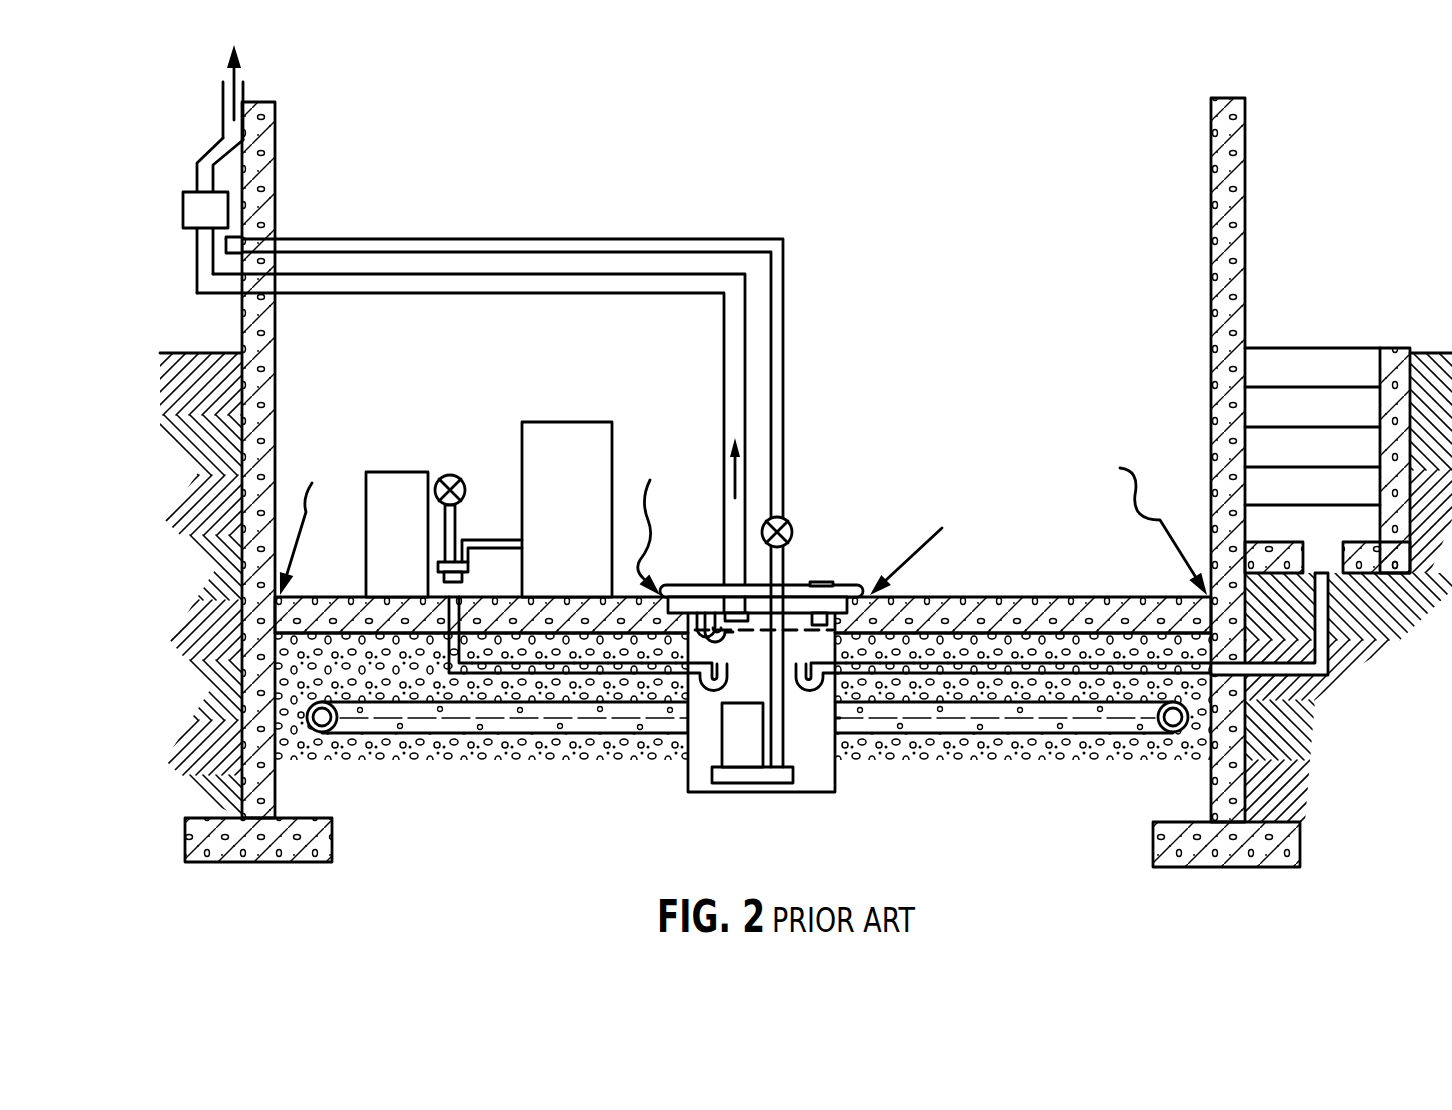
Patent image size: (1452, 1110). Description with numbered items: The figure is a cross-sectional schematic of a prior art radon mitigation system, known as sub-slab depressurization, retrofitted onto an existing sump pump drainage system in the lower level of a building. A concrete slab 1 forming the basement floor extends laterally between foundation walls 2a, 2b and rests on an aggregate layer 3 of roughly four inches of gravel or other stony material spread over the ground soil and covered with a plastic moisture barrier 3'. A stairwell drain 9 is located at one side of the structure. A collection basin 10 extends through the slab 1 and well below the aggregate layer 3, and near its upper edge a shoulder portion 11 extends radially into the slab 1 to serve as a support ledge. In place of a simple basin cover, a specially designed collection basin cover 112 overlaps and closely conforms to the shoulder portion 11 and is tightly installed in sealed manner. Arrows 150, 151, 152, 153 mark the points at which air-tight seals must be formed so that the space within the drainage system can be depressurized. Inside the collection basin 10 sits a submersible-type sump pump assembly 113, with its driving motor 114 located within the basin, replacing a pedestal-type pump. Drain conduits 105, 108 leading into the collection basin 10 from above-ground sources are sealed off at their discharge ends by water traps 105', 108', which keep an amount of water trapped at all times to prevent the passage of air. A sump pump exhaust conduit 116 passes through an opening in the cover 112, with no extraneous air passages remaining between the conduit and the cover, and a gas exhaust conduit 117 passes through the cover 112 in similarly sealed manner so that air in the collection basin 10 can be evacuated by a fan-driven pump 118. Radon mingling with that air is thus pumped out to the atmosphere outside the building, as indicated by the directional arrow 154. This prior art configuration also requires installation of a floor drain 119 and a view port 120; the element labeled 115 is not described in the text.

The concrete slab 1 is at (1108, 605).
The foundation wall 2a is at (276, 138).
The foundation wall 2b is at (1218, 148).
The aggregate layer 3 is at (1023, 650).
The plastic moisture barrier 3' is at (630, 726).
The stairwell drain 9 is at (1322, 555).
The collection basin 10 is at (690, 778).
The shoulder portion 11 is at (830, 592).
The drain conduit 105 is at (509, 736).
The water trap 105' is at (588, 695).
The drain conduit 108 is at (1002, 732).
The water trap 108' is at (1003, 730).
The collection basin cover 112 is at (800, 590).
The submersible-type sump pump assembly 113 is at (795, 770).
The driving motor 114 is at (745, 743).
The exhaust pipe 115 is at (800, 578).
The sump pump exhaust conduit 116 is at (545, 240).
The gas exhaust conduit 117 is at (388, 275).
The fan-driven pump 118 is at (197, 212).
The floor drain 119 is at (713, 622).
The view port 120 is at (822, 586).
The arrow 150 is at (308, 521).
The arrow 151 is at (653, 521).
The arrow 152 is at (935, 560).
The arrow 153 is at (1137, 522).
The directional arrow 154 is at (232, 60).